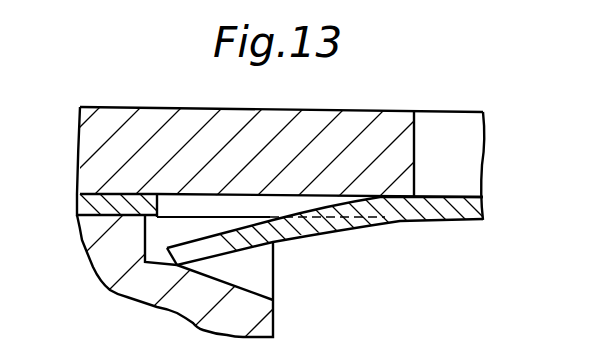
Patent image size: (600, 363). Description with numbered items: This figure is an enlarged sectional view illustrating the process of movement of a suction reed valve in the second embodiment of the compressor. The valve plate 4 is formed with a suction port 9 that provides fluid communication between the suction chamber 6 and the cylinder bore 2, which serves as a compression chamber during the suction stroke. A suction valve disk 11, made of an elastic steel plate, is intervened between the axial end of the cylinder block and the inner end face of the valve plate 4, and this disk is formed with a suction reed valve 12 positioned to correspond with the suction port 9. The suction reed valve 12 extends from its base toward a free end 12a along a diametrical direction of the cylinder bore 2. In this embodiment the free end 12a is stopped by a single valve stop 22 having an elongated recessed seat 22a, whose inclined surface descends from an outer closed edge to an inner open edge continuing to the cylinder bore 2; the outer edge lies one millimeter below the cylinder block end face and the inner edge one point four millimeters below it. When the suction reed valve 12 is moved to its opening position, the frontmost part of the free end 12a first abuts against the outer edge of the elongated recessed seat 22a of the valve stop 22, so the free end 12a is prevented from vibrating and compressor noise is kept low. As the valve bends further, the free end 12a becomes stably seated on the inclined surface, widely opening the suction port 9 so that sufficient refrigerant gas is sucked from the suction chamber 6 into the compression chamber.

The cylinder bore 2 is at (273, 328).
The valve plate 4 is at (156, 118).
The suction chamber 6 is at (285, 91).
The suction port 9 is at (417, 135).
The suction valve disk 11 is at (77, 206).
The suction reed valve 12 is at (338, 231).
The free end 12a is at (224, 256).
The valve stop 22 is at (148, 243).
The elongated recessed seat 22a is at (263, 287).